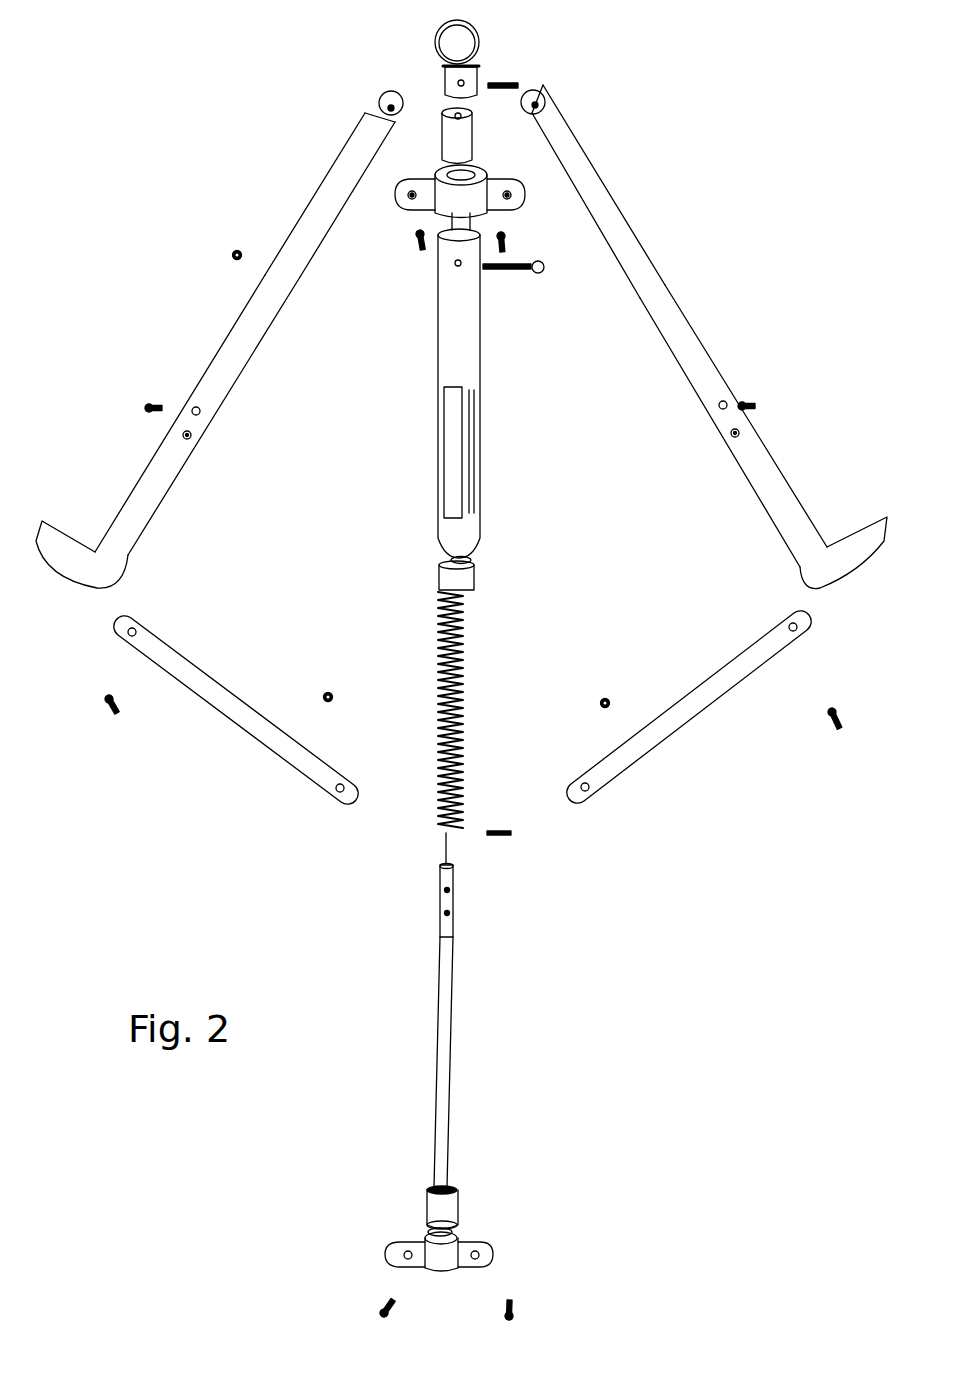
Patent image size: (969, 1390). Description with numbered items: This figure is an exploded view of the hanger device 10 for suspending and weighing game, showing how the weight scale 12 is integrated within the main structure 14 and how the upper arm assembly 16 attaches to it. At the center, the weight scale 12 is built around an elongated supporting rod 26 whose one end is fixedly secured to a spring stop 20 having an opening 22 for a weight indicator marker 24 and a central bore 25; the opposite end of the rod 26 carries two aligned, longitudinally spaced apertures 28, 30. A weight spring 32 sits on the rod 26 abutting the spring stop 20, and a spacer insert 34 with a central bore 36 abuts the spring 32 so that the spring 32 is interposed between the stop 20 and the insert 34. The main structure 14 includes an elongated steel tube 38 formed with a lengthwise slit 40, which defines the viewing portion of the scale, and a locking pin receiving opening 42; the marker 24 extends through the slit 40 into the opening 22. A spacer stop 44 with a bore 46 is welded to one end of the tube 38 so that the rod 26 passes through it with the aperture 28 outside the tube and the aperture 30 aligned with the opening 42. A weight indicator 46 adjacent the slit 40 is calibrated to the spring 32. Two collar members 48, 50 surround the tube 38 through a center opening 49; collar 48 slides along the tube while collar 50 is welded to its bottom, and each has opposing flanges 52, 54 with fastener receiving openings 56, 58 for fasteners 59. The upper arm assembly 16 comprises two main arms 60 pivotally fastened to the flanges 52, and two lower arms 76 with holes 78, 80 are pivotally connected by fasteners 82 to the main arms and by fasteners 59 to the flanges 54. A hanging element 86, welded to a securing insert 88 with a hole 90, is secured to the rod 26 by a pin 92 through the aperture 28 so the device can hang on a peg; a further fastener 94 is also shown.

The hanger device 10 is at (770, 205).
The weight scale 12 is at (372, 878).
The main structure 14 is at (355, 372).
The upper arm assembly 16 is at (648, 204).
The spring stop 20 is at (427, 1200).
The opening 22 is at (458, 1214).
The weight indicator marker 24 is at (513, 835).
The bore 25 is at (447, 1186).
The elongated supporting rod 26 is at (453, 1040).
The aperture 28 is at (452, 890).
The aperture 30 is at (440, 914).
The weight spring 32 is at (468, 722).
The spacer insert 34 is at (470, 588).
The central bore 36 is at (472, 558).
The elongated tube 38 is at (468, 362).
The lengthwise slit 40 is at (476, 465).
The locking pin receiving opening 42 is at (458, 268).
The spacer stop 44 is at (465, 138).
The weight indicator 46 is at (465, 114).
The collar member 48 is at (440, 180).
The center opening 49 is at (468, 172).
The collar member 50 is at (434, 1270).
The flange 52 is at (398, 188).
The flange 54 is at (385, 1262).
The fastener receiving opening 56 is at (412, 200).
The fastener receiving opening 58 is at (390, 1250).
The fastener 59 is at (422, 255).
The main arm 60 is at (463, 318).
The lower arm 76 is at (482, 736).
The hole 78 is at (134, 640).
The hole 80 is at (342, 800).
The fastener 82 is at (112, 722).
The hanging element 86 is at (470, 35).
The securing insert 88 is at (478, 68).
The hole 90 is at (445, 82).
The pin 92 is at (520, 82).
The bolt 94 is at (540, 274).